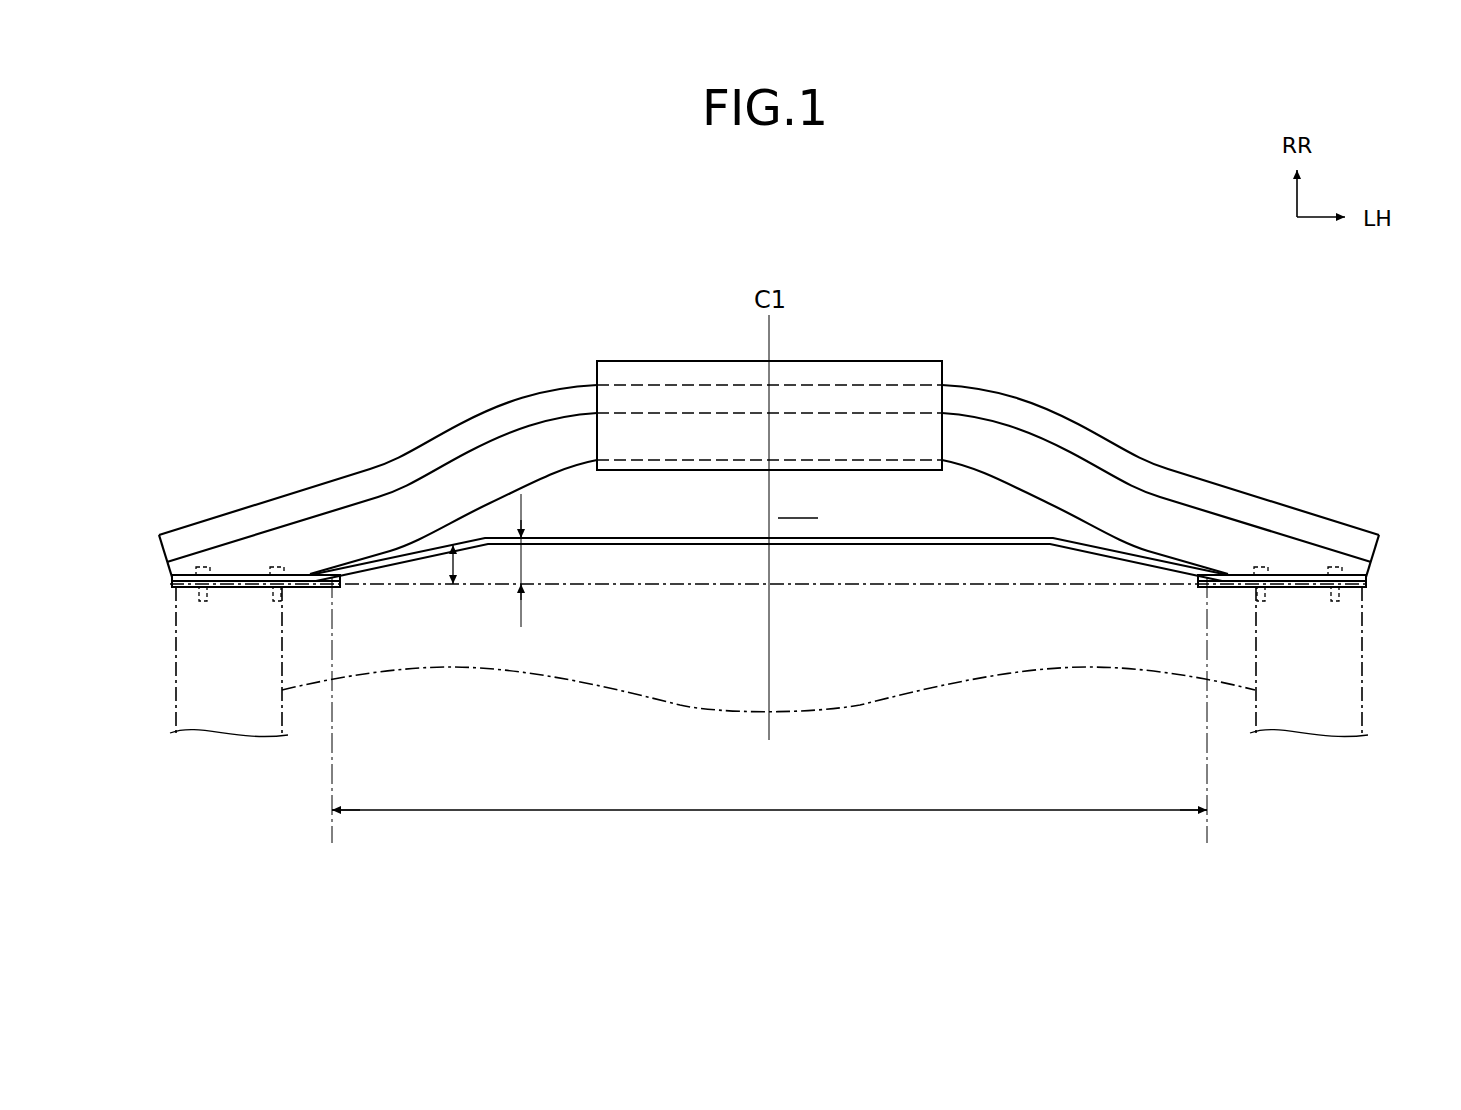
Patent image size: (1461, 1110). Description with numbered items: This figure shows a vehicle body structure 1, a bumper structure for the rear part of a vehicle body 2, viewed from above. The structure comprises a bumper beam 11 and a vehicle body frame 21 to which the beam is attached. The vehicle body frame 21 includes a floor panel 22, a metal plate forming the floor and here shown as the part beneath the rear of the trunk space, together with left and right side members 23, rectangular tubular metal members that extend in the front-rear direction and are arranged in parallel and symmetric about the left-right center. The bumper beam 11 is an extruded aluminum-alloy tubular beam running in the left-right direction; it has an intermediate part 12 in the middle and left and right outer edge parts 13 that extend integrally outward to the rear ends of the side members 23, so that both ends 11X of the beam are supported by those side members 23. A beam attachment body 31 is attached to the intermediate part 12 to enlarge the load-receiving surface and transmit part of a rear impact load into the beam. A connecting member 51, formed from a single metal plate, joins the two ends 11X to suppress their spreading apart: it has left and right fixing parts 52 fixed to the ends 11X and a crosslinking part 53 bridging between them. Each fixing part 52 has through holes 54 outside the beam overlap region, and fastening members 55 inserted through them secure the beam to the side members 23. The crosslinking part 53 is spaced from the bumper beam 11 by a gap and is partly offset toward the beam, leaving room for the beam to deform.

The vehicle body structure 1 is at (988, 226).
The vehicle body 2 is at (1395, 670).
The bumper beam 11 is at (996, 392).
The both ends of the bumper beam 11X is at (215, 540).
The intermediate part 12 is at (893, 383).
The outer edge parts 13 is at (357, 497).
The vehicle body frame 21 is at (1370, 765).
The floor panel 22 is at (850, 683).
The side members 23 is at (176, 713).
The beam attachment body 31 is at (835, 361).
The connecting member 51 is at (878, 536).
The fixing parts 52 is at (233, 580).
The crosslinking part 53 is at (650, 537).
The through holes 54 is at (178, 586).
The fastening members 55 is at (200, 600).